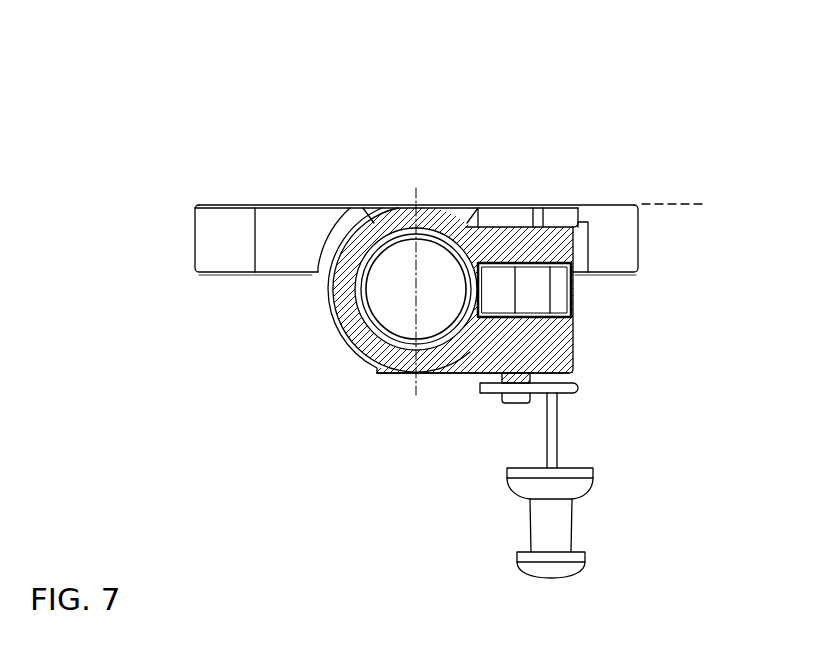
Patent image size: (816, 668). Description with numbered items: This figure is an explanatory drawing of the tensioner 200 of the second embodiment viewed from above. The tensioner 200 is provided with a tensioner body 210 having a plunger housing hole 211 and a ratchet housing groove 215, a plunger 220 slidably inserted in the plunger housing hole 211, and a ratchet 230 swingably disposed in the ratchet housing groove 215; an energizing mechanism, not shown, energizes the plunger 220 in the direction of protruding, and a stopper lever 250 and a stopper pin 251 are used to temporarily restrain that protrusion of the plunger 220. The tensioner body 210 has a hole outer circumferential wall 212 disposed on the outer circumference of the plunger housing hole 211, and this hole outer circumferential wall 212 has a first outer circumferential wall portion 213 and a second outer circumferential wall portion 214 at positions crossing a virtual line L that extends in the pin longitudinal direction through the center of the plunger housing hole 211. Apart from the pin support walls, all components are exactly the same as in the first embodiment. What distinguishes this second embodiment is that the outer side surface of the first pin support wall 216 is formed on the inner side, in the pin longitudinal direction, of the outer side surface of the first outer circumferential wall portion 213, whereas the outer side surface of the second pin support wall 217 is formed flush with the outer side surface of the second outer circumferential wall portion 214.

The tensioner 200 is at (168, 120).
The tensioner body 210 is at (265, 250).
The plunger housing hole 211 is at (387, 286).
The hole outer circumferential wall 212 is at (338, 257).
The first outer circumferential wall portion 213 is at (415, 207).
The second outer circumferential wall portion 214 is at (402, 373).
The ratchet housing groove 215 is at (555, 290).
The first pin support wall 216 is at (514, 240).
The second pin support wall 217 is at (483, 373).
The plunger 220 is at (345, 305).
The ratchet 230 is at (611, 292).
The stopper lever 250 is at (577, 387).
The stopper pin 251 is at (562, 522).